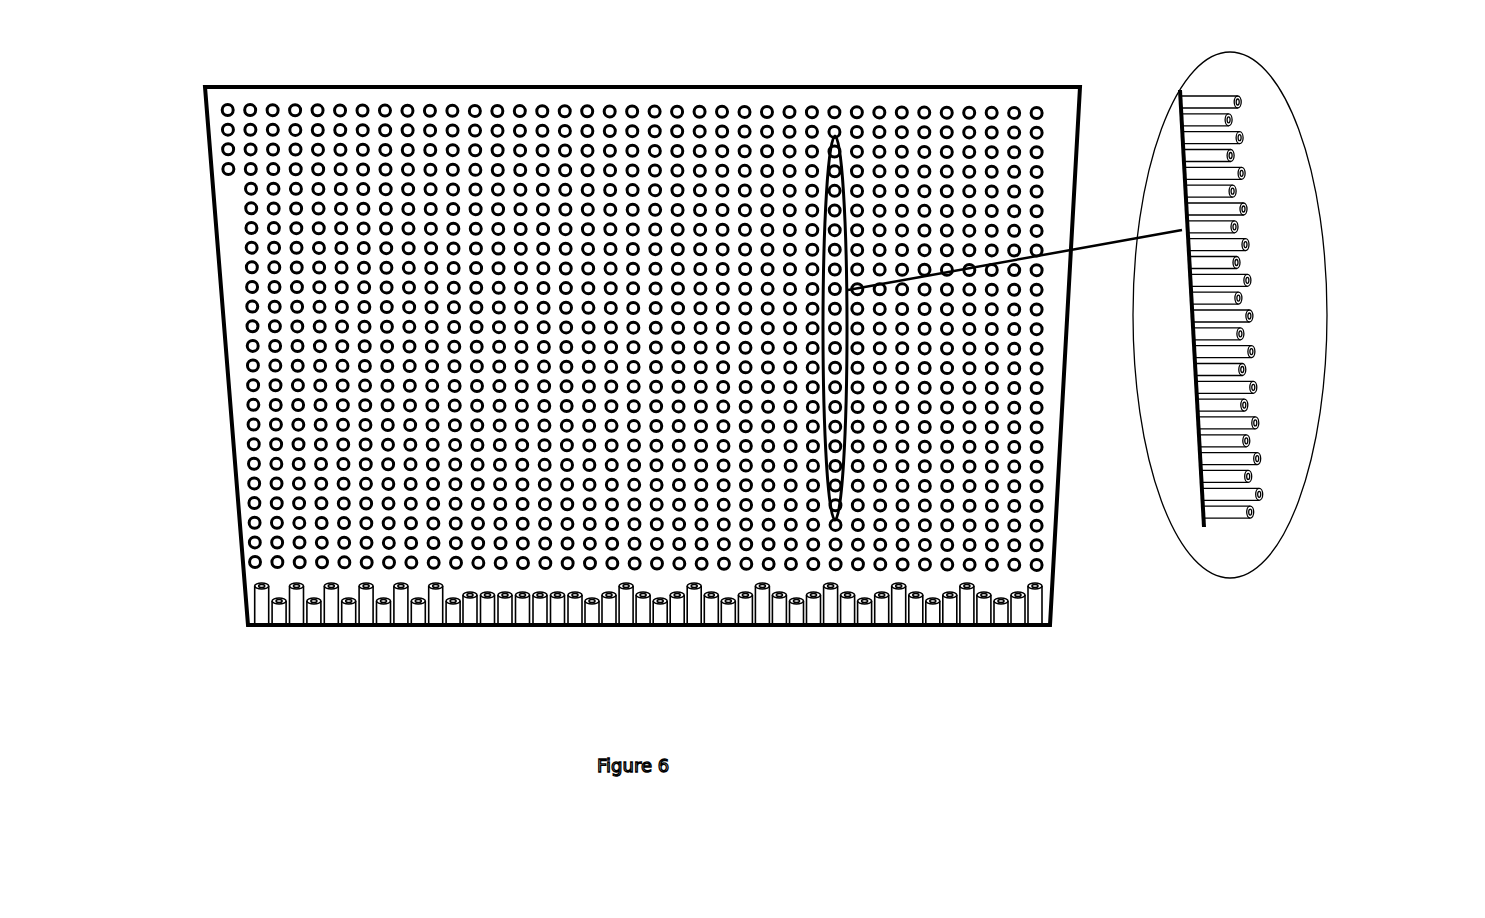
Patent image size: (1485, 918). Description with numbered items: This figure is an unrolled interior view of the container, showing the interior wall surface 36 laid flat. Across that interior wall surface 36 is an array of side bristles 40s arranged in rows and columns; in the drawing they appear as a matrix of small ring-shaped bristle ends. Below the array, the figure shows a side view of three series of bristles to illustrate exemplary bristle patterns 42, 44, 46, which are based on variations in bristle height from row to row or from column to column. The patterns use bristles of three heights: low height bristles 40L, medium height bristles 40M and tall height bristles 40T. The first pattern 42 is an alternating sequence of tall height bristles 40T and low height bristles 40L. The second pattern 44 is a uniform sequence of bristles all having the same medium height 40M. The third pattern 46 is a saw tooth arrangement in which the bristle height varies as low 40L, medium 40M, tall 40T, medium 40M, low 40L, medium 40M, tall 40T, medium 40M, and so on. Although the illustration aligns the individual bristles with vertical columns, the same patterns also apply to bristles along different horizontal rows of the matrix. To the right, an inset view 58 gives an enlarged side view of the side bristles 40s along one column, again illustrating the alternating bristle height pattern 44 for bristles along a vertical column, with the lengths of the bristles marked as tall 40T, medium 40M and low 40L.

The interior wall surface 36 is at (1055, 130).
The side bristles 40s is at (255, 350).
The tall height bristles 40T is at (265, 593).
The medium height bristles 40M is at (1020, 609).
The low height bristles 40L is at (282, 613).
The first pattern 42 is at (462, 640).
The second pattern 44 is at (585, 640).
The third pattern 46 is at (1048, 640).
The inset view 58 is at (1075, 315).